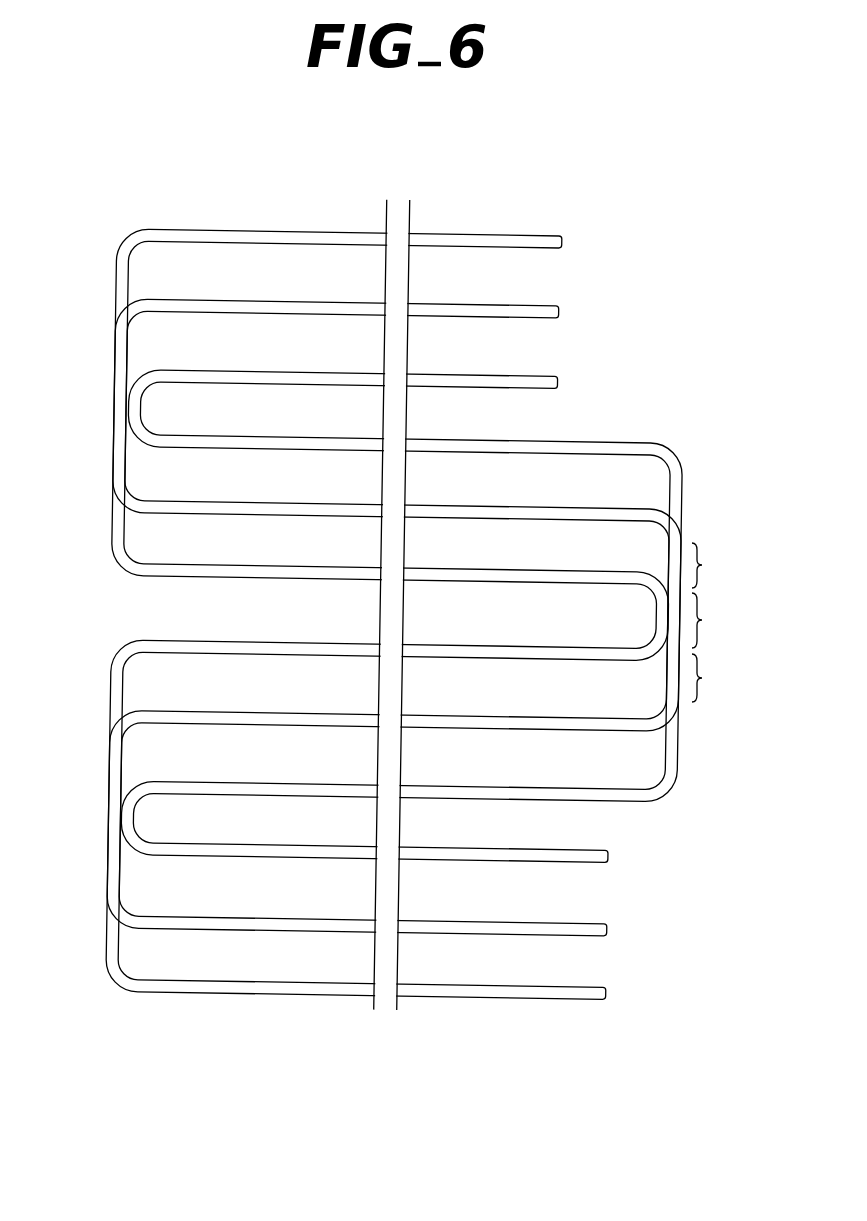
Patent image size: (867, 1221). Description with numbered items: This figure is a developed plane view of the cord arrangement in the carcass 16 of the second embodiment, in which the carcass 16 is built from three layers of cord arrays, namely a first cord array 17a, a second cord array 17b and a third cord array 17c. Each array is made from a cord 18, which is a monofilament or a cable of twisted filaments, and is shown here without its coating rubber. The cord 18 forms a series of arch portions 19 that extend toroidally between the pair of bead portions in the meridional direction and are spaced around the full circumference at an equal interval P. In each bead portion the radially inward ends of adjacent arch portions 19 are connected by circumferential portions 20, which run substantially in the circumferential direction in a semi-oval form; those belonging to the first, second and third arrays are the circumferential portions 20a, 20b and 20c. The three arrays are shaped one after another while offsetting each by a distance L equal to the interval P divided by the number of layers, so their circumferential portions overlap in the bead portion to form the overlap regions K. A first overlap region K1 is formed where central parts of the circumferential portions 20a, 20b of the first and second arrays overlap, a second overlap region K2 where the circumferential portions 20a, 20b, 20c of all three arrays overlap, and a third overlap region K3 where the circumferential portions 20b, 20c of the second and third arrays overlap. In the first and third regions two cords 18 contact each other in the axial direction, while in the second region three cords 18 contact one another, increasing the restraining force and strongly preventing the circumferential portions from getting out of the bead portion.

The carcass 16 is at (252, 1001).
The first cord array 17a is at (272, 230).
The second cord array 17b is at (271, 298).
The third cord array 17c is at (271, 368).
The cord 18 is at (572, 250).
The arch portions 19 is at (538, 453).
The circumferential portions 20 is at (212, 828).
The circumferential portion of first cord array 20a is at (130, 646).
The circumferential portion of second cord array 20b is at (117, 732).
The circumferential portion of third cord array 20c is at (120, 986).
The overlap regions K is at (721, 653).
The first overlap region K1 is at (717, 565).
The second overlap region K2 is at (717, 620).
The third overlap region K3 is at (717, 678).
The interval P is at (293, 918).
The offset distance L is at (452, 787).